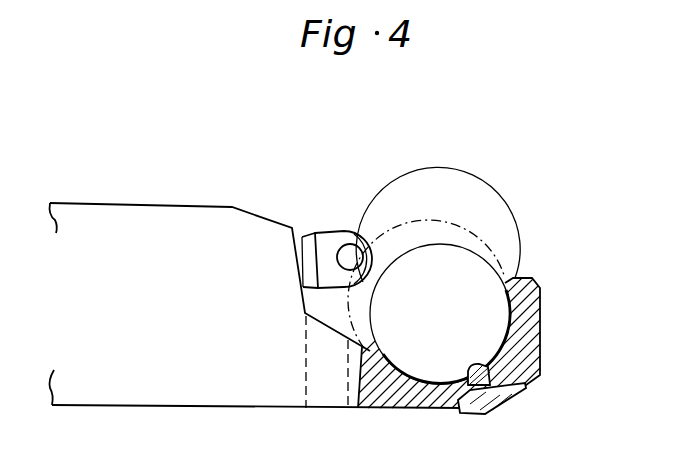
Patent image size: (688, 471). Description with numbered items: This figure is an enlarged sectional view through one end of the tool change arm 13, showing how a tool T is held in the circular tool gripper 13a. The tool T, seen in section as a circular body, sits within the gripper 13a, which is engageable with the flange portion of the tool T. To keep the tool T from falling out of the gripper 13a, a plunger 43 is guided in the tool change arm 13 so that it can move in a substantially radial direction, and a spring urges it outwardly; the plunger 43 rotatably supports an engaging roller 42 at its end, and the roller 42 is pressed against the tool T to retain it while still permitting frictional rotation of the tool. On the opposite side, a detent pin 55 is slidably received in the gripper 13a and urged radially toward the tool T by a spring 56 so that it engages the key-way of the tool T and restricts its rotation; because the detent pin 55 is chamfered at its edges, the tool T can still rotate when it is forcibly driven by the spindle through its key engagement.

The tool change arm 13 is at (232, 208).
The tool gripper 13a is at (533, 328).
The engaging roller 42 is at (368, 236).
The plunger 43 is at (305, 248).
The detent pin 55 is at (490, 382).
The spring 56 is at (484, 407).
The tool T is at (506, 258).